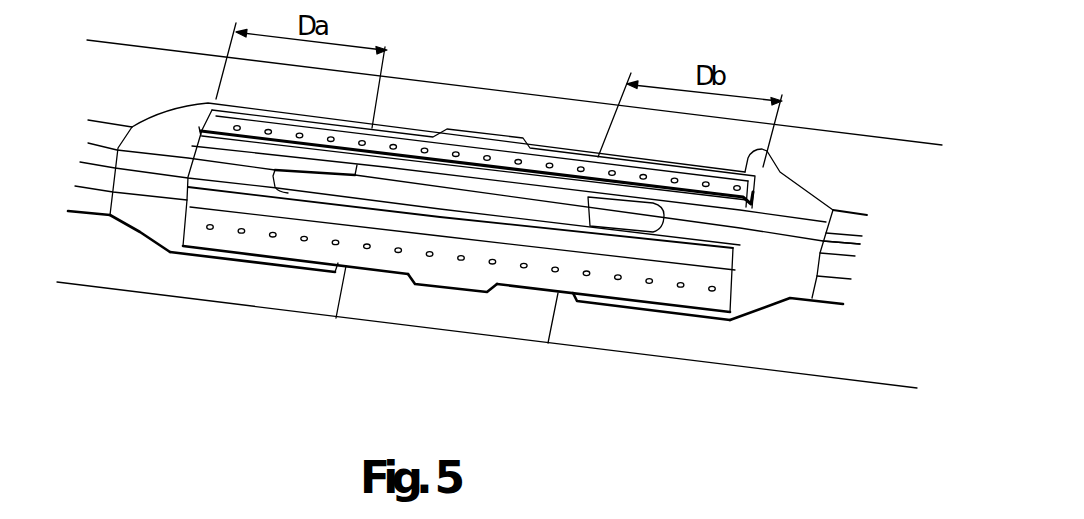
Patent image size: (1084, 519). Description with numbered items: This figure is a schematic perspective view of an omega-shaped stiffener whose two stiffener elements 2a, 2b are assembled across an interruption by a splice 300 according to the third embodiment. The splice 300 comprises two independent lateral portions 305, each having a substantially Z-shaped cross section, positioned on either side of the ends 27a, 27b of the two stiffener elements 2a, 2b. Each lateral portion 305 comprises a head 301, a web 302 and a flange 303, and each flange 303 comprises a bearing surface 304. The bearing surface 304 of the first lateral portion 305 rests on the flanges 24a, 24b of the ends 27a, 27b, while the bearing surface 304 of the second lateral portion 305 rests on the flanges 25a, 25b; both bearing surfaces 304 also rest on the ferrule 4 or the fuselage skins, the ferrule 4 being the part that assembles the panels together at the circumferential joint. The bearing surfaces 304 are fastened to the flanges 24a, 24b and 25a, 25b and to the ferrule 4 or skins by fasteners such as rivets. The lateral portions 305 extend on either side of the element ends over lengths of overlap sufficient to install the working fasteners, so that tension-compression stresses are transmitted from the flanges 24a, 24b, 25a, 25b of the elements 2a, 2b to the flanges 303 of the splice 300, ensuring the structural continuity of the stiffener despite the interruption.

The stiffener element 2a is at (95, 240).
The stiffener element 2b is at (813, 332).
The ferrule 4 is at (462, 312).
The flange 24a is at (158, 219).
The flange 24b is at (770, 298).
The flange 25a is at (172, 125).
The flange 25b is at (813, 215).
The end of stiffener element 27a is at (263, 265).
The end of stiffener element 27b is at (620, 307).
The splice 300 is at (486, 122).
The head 301 is at (395, 203).
The web 302 is at (495, 367).
The flange 303 is at (435, 140).
The bearing surface 304 is at (768, 152).
The lateral portion 305 is at (502, 137).